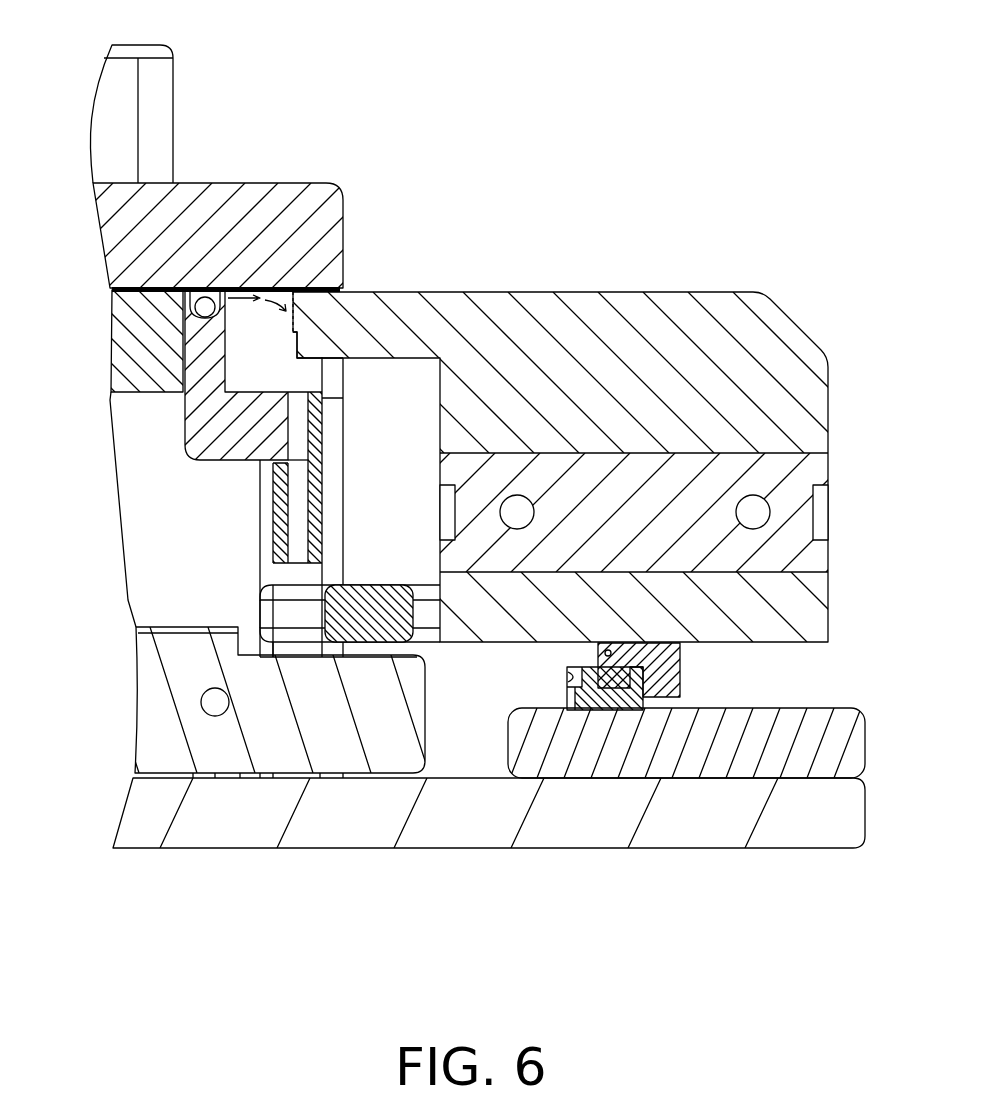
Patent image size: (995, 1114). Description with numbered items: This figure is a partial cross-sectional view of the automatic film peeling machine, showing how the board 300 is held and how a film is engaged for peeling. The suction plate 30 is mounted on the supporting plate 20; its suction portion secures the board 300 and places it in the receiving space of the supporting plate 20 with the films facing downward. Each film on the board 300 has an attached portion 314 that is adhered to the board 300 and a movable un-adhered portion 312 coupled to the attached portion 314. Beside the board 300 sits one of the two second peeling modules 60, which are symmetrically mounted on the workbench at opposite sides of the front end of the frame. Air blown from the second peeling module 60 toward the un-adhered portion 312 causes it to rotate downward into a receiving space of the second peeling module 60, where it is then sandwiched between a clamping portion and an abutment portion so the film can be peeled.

The supporting plate 20 is at (142, 358).
The suction plate 30 is at (325, 200).
The board 300 is at (277, 287).
The un-adhered portion 312 is at (350, 292).
The attached portion 314 is at (295, 328).
The second peeling module 60 is at (650, 320).